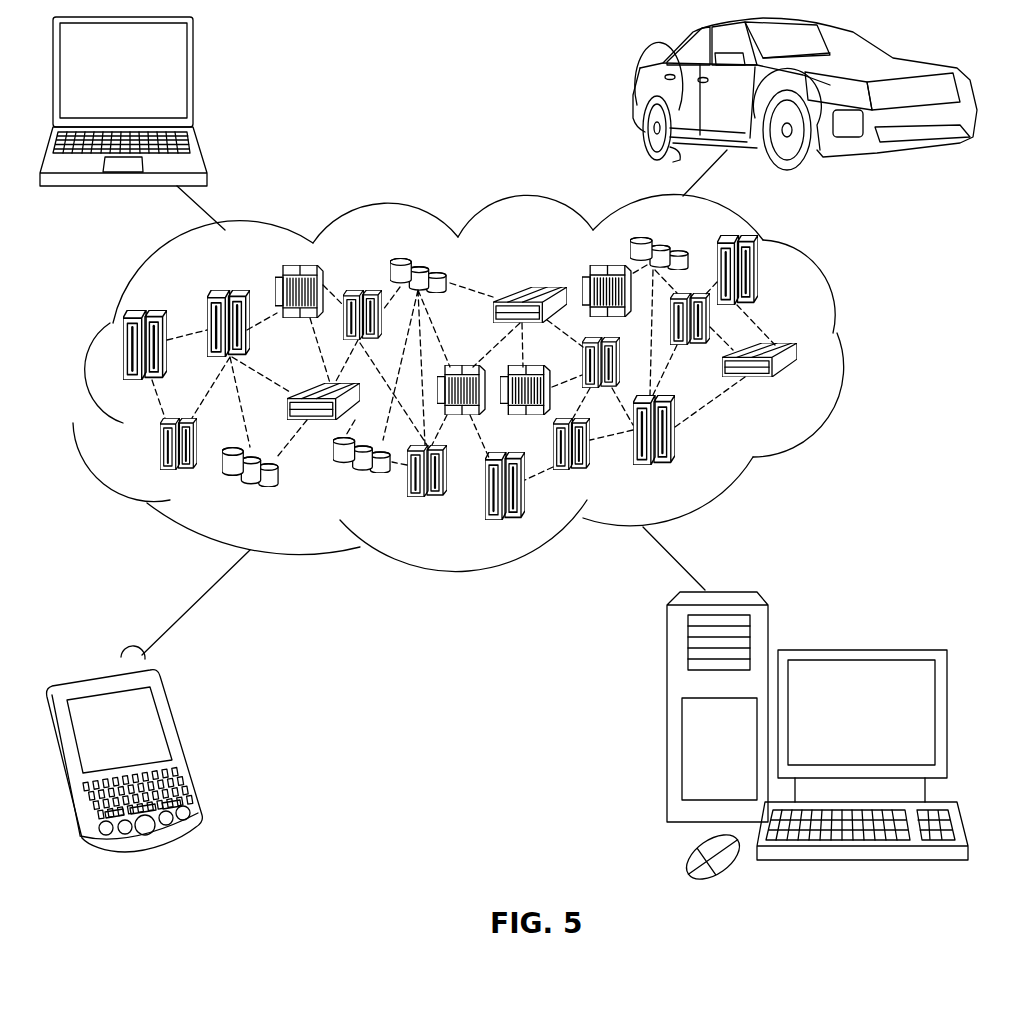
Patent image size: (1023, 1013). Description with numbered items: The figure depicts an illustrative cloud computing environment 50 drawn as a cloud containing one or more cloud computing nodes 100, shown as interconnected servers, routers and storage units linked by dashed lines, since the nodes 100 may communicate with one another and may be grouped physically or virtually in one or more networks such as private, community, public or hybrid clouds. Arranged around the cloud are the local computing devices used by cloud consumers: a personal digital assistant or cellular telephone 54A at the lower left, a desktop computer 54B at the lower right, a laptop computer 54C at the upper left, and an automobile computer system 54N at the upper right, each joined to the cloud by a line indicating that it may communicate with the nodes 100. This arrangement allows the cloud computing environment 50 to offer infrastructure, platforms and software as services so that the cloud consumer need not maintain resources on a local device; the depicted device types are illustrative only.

The cloud computing environment 50 is at (857, 352).
The cloud computing node 100 is at (806, 390).
The personal digital assistant or cellular telephone 54A is at (183, 746).
The desktop computer 54B is at (858, 650).
The laptop computer 54C is at (193, 80).
The automobile computer system 54N is at (633, 95).